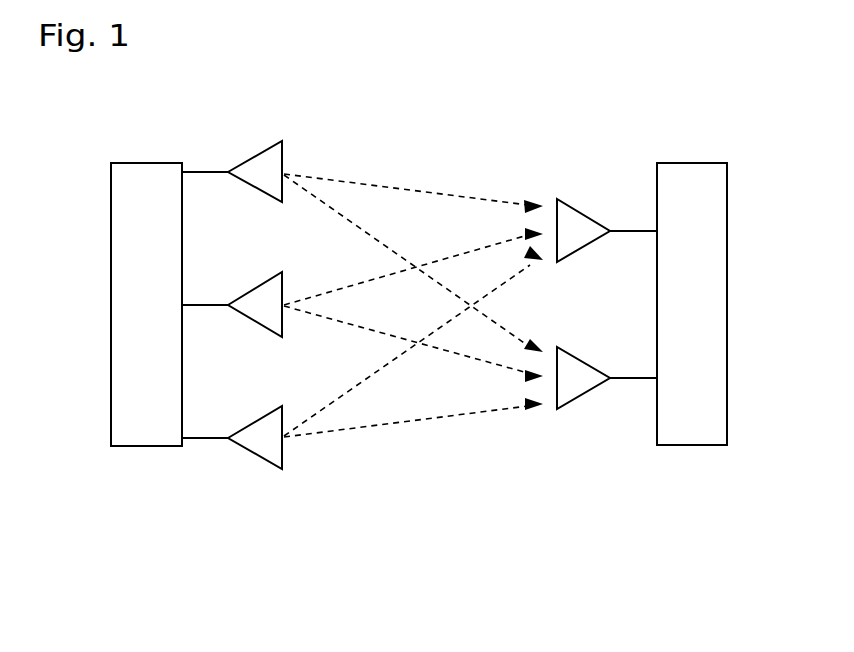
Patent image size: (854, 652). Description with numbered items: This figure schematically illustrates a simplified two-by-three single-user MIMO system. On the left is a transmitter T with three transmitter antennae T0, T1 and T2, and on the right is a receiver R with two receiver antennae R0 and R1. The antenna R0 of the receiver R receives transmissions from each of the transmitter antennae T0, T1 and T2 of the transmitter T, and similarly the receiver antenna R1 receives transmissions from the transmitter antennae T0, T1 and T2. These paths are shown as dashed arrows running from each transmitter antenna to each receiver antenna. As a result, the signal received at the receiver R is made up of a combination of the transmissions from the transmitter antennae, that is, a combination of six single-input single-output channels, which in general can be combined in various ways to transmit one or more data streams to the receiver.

The transmitter T is at (154, 318).
The transmitter antenna T0 is at (232, 171).
The transmitter antenna T1 is at (232, 304).
The transmitter antenna T2 is at (232, 437).
The receiver R is at (701, 317).
The receiver antenna R0 is at (607, 230).
The receiver antenna R1 is at (607, 378).